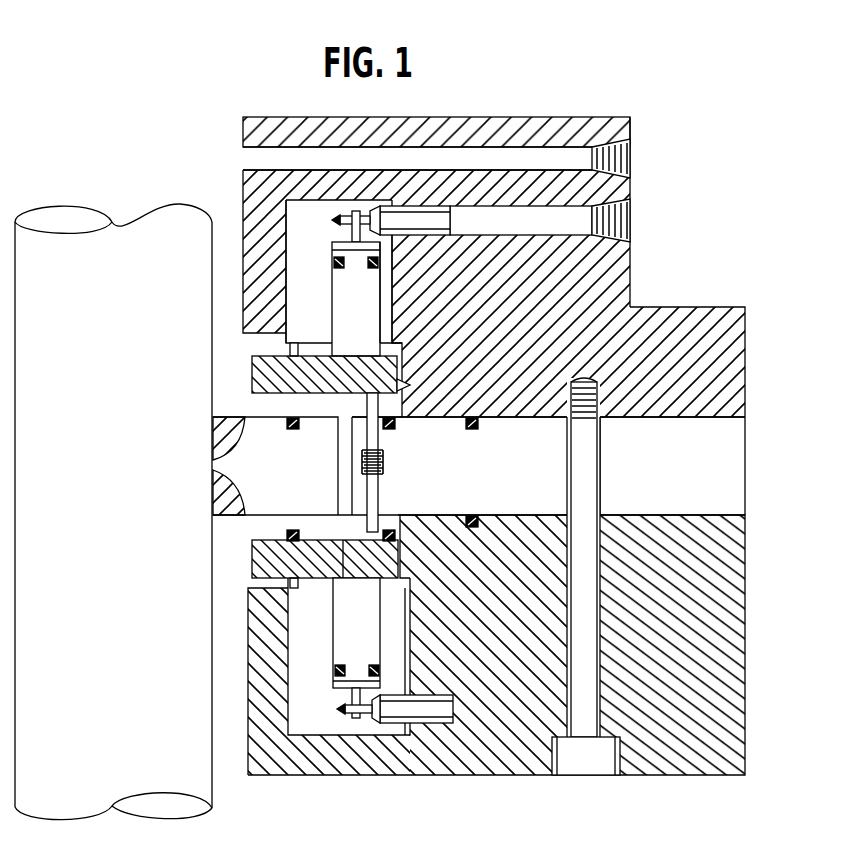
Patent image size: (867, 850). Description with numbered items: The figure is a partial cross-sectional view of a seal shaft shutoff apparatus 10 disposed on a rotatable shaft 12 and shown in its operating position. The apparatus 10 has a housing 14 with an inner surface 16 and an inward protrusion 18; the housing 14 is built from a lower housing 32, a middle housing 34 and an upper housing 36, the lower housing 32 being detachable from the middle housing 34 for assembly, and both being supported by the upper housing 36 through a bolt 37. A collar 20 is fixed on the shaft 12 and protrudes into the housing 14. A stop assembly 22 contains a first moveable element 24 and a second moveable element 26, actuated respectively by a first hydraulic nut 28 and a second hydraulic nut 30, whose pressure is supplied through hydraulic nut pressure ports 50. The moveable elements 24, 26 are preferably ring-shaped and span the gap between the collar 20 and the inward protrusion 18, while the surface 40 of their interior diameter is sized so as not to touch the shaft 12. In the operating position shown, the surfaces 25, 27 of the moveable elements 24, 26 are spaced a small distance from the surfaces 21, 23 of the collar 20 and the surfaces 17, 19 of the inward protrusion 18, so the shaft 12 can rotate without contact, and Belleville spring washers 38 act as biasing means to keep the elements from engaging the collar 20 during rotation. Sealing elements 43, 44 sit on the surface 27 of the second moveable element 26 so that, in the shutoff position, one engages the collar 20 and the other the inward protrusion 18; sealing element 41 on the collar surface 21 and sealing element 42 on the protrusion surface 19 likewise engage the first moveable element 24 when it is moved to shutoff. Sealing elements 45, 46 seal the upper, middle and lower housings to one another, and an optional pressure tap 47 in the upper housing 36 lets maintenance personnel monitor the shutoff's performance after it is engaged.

The seal shaft shutoff apparatus 10 is at (628, 72).
The rotatable shaft 12 is at (122, 357).
The housing 14 is at (523, 117).
The inner surface 16 is at (398, 325).
The surface of the inward protrusion 17 is at (510, 520).
The inward protrusion 18 is at (480, 481).
The surface of the inward protrusion 19 is at (510, 418).
The collar 20 is at (330, 462).
The surface of the collar 21 is at (230, 417).
The stop assembly 22 is at (300, 318).
The surface of the collar 23 is at (228, 518).
The first moveable element 24 is at (338, 384).
The surface of the first moveable element 25 is at (410, 385).
The second moveable element 26 is at (335, 572).
The surface of the second moveable element 27 is at (375, 572).
The first hydraulic nut 28 is at (367, 325).
The second hydraulic nut 30 is at (367, 652).
The lower housing 32 is at (692, 671).
The middle housing 34 is at (691, 481).
The upper housing 36 is at (692, 411).
The bolt 37 is at (597, 767).
The Belleville spring washers 38 is at (382, 463).
The surface of the interior diameter 40 is at (250, 378).
The sealing element 41 is at (292, 431).
The sealing element 42 is at (390, 430).
The sealing element 43 is at (292, 529).
The sealing element 44 is at (390, 529).
The sealing element 45 is at (474, 515).
The sealing element 46 is at (474, 431).
The pressure tap 47 is at (618, 164).
The hydraulic nut pressure ports 50 is at (618, 232).